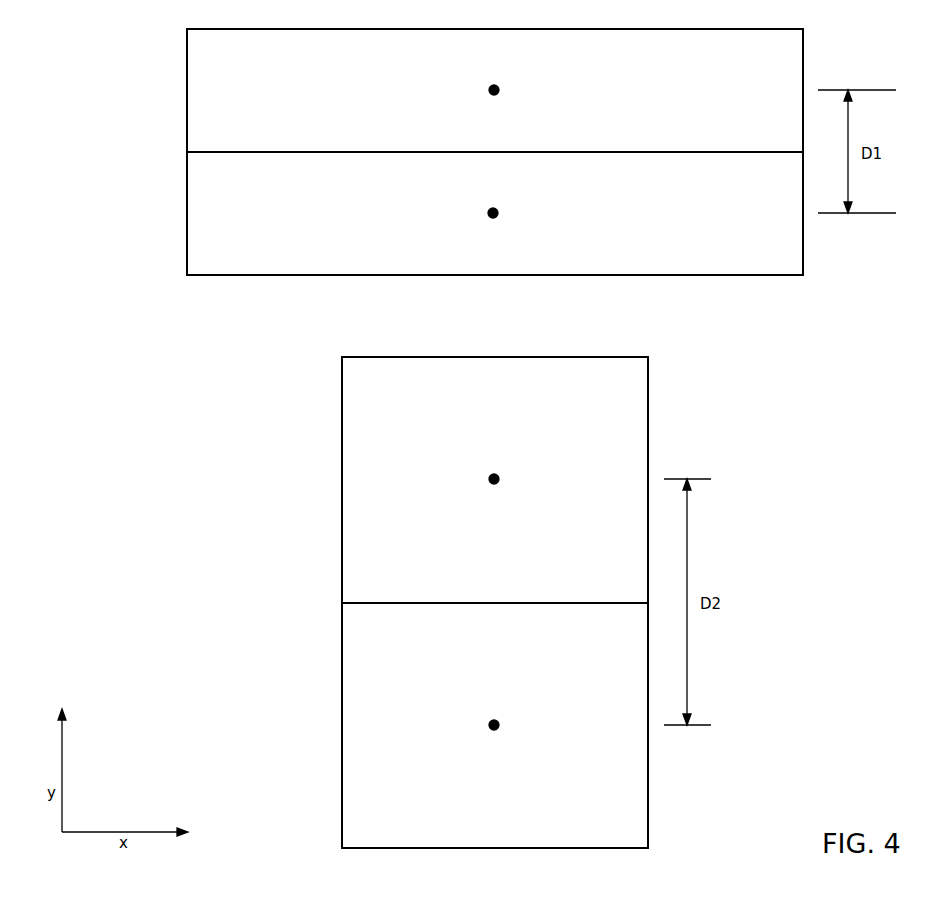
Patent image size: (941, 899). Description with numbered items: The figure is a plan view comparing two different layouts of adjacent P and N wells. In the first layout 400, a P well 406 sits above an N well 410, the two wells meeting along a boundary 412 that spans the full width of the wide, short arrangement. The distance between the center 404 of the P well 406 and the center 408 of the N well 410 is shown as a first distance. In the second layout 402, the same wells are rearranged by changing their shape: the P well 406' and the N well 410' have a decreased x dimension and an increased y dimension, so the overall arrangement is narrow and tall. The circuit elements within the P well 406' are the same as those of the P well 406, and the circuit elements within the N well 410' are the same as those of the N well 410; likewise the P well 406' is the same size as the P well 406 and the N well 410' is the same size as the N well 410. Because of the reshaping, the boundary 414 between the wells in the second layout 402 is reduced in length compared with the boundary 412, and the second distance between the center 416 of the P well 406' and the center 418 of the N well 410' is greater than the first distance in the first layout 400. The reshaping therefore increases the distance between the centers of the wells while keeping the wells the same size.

The layout 400 is at (841, 46).
The layout 402 is at (679, 362).
The center of P well 404 is at (500, 90).
The P well 406 is at (495, 90).
The P well 406' is at (495, 480).
The center of N well 408 is at (499, 213).
The N well 410 is at (495, 213).
The N well 410' is at (495, 725).
The boundary 412 is at (633, 152).
The boundary 414 is at (558, 603).
The center of P well 416 is at (500, 479).
The center of N well 418 is at (500, 725).